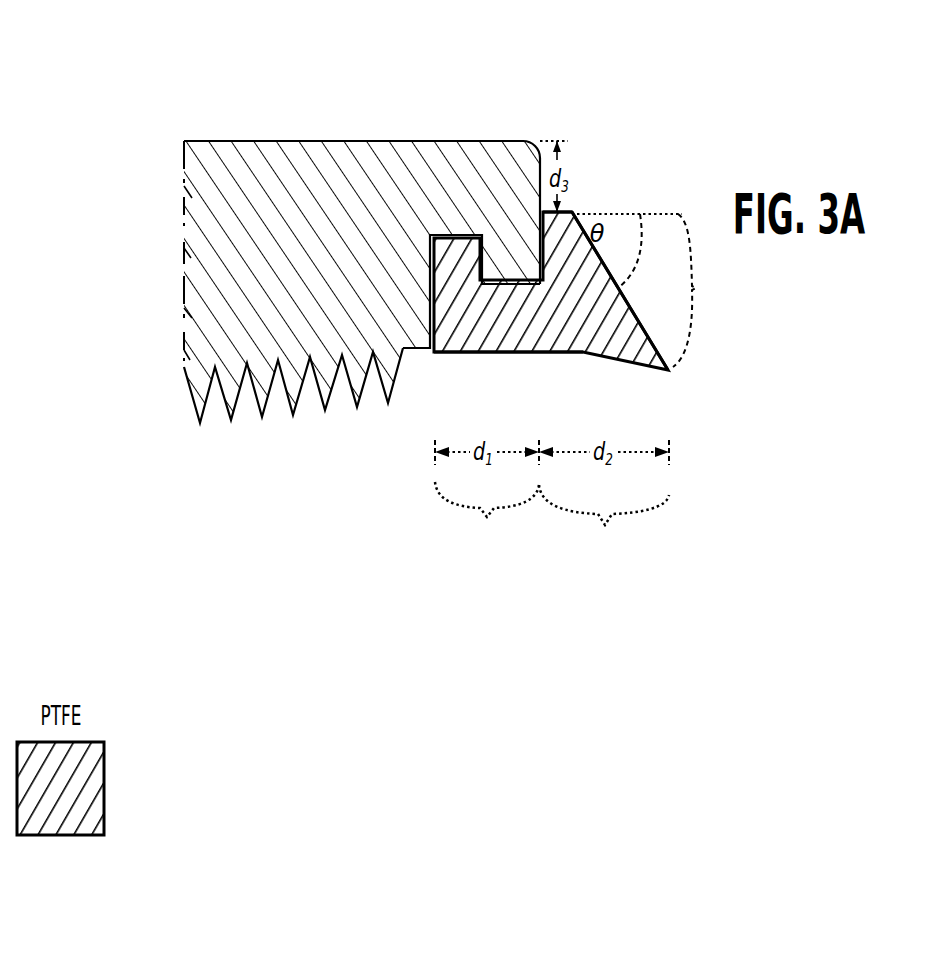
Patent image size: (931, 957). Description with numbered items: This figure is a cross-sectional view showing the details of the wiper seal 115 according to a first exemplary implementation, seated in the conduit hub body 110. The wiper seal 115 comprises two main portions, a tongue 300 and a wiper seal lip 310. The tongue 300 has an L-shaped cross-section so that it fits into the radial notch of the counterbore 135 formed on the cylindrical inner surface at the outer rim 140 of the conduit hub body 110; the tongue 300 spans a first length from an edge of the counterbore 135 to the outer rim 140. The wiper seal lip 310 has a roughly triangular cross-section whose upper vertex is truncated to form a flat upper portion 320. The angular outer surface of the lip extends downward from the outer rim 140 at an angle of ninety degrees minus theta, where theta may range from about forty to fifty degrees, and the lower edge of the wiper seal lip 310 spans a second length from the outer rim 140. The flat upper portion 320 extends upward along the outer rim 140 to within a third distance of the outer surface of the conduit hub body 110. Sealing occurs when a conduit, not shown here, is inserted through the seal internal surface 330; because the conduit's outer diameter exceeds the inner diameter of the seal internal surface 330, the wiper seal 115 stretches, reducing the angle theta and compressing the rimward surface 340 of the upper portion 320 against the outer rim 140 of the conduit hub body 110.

The conduit hub body 110 is at (287, 130).
The counterbore 135 is at (416, 231).
The outer rim 140 is at (538, 130).
The rimward surface 340 is at (528, 237).
The flat upper portion 320 is at (583, 198).
The wiper seal 115 is at (652, 291).
The seal internal surface 330 is at (590, 364).
The tongue 300 is at (487, 535).
The wiper seal lip 310 is at (605, 542).